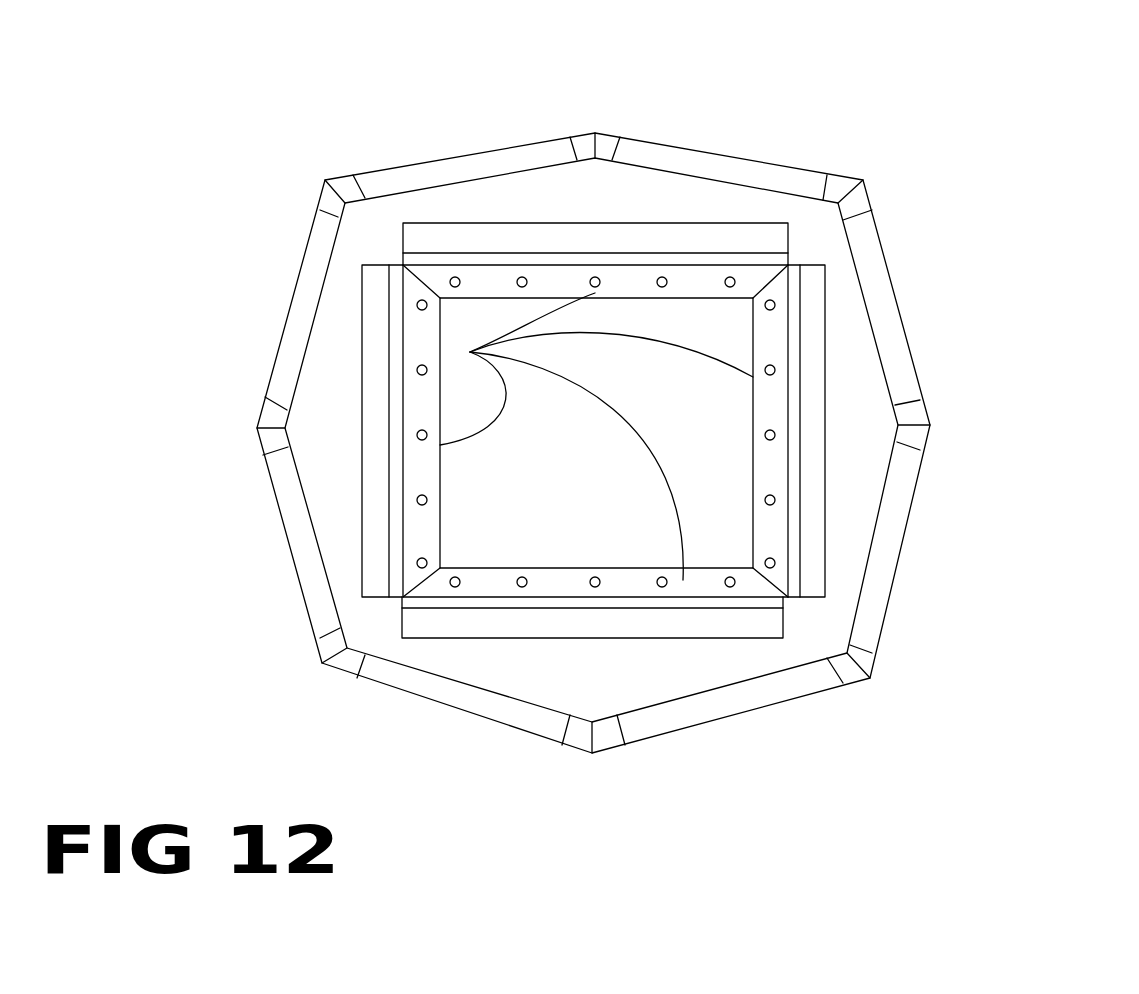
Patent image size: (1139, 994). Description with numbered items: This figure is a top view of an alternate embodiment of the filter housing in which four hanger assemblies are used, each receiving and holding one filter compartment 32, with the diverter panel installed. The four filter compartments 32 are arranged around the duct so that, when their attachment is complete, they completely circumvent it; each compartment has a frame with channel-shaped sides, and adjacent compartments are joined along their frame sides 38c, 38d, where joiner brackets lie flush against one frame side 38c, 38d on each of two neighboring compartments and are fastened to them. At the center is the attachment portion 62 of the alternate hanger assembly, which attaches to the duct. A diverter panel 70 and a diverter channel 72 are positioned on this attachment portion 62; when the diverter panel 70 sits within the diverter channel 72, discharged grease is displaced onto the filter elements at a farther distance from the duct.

The filter compartment 32 is at (355, 175).
The frame side 38c is at (433, 182).
The frame side 38d is at (658, 145).
The attachment portion 62 is at (470, 352).
The diverter panel 70 is at (483, 235).
The diverter channel 72 is at (728, 257).